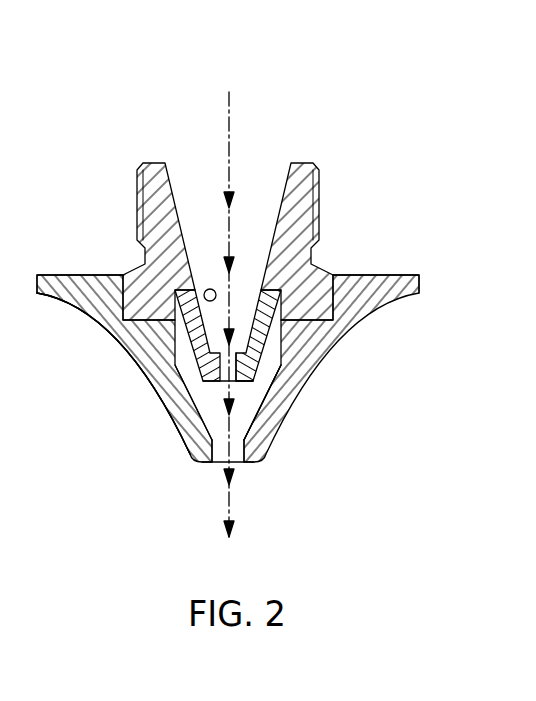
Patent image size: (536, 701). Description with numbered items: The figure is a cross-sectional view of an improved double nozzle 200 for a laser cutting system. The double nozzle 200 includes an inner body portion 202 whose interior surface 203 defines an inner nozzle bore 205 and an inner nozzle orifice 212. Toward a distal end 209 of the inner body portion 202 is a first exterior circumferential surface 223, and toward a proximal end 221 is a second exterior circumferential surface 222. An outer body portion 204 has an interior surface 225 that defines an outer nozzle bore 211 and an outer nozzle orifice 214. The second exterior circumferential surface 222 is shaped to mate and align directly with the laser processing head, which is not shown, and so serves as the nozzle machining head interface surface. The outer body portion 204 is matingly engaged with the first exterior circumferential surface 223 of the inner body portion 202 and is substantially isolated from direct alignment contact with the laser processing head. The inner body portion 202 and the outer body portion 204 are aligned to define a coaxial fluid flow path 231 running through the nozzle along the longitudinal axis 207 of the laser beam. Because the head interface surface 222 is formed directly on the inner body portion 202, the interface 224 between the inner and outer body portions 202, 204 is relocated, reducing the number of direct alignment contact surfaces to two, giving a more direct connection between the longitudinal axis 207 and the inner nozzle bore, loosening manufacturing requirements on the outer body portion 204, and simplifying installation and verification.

The double nozzle 200 is at (237, 288).
The inner body portion 202 is at (312, 163).
The interior surface 203 is at (201, 403).
The outer body portion 204 is at (295, 407).
The inner nozzle bore 205 is at (256, 171).
The longitudinal axis 207 is at (225, 160).
The distal end 209 is at (95, 409).
The outer nozzle bore 211 is at (257, 384).
The inner nozzle orifice 212 is at (212, 443).
The outer nozzle orifice 214 is at (256, 484).
The proximal end 221 is at (157, 96).
The second exterior circumferential surface 222 is at (347, 251).
The first exterior circumferential surface 223 is at (108, 311).
The interface 224 is at (101, 278).
The interior surface 225 is at (247, 466).
The coaxial fluid flow path 231 is at (228, 505).